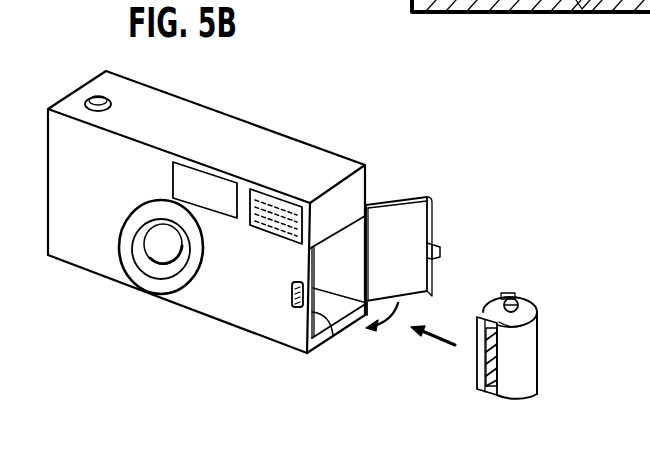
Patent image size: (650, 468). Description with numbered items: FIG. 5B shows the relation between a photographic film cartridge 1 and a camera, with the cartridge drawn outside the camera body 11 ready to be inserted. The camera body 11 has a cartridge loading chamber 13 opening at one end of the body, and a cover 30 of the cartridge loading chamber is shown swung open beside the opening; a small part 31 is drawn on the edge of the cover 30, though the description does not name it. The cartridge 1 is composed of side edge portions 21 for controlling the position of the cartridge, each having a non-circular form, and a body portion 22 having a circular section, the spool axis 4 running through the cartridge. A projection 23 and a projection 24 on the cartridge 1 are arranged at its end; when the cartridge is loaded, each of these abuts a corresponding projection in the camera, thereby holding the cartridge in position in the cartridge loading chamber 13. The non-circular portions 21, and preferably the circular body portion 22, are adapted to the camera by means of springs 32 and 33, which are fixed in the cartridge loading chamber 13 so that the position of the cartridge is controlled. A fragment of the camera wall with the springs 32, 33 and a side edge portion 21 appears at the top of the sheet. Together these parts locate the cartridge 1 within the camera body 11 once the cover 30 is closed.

The cartridge 1 is at (527, 409).
The spool axis 4 is at (513, 322).
The camera body 11 is at (268, 132).
The cartridge loading chamber 13 is at (331, 331).
The side edge portions 21 is at (490, 308).
The body portion 22 is at (487, 367).
The projection 23 is at (527, 304).
The projection 24 is at (507, 295).
The cover of the cartridge loading chamber 30 is at (404, 203).
The lid latch 31 is at (443, 251).
The spring 32 is at (552, 14).
The spring 33 is at (582, 14).